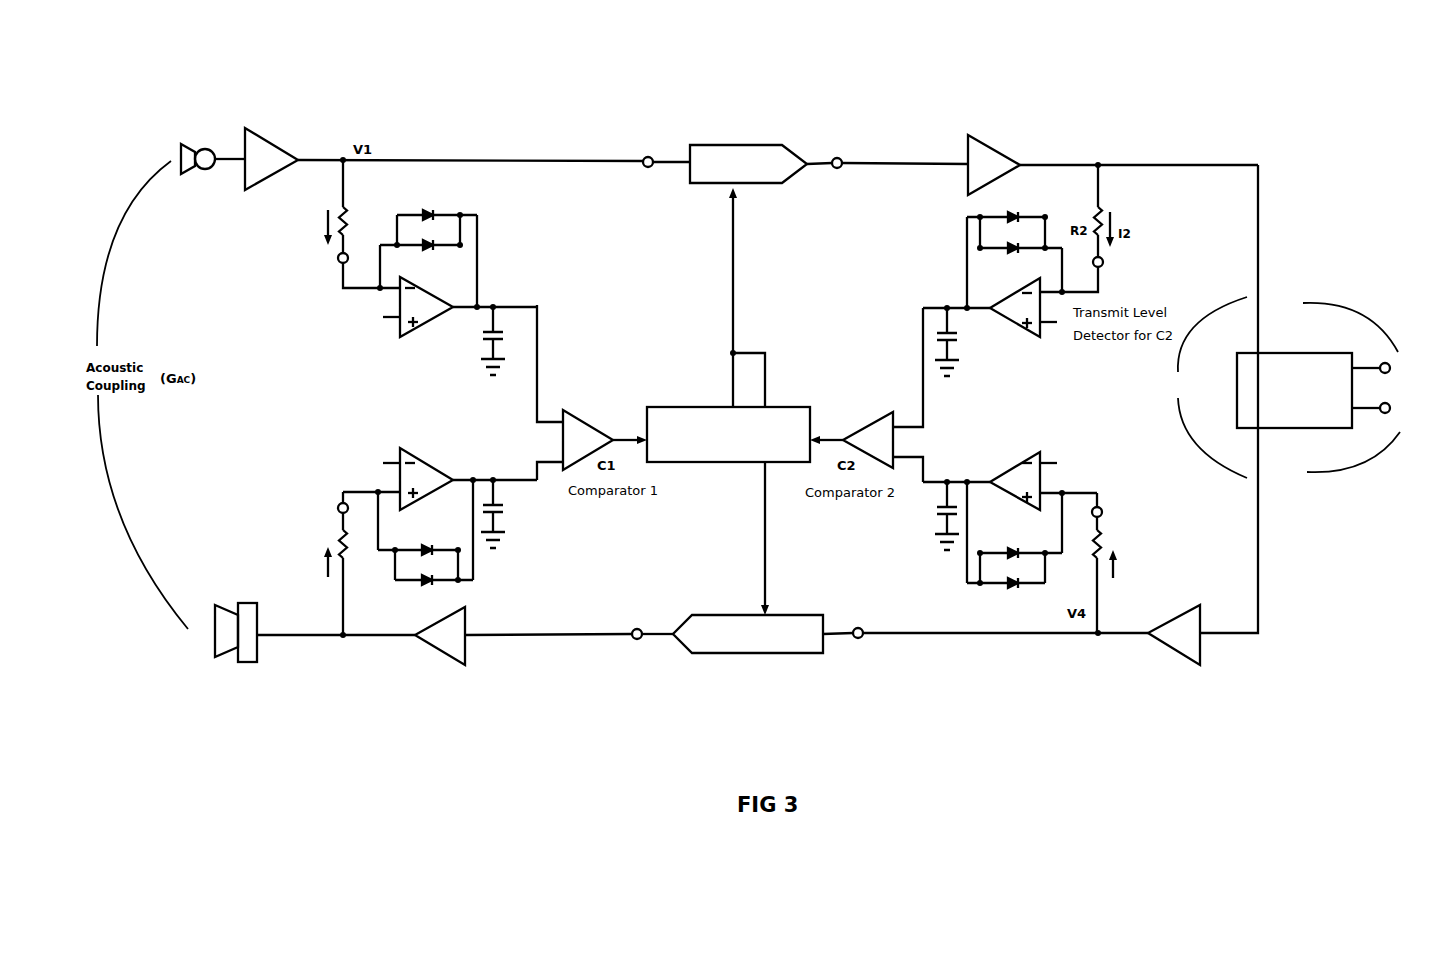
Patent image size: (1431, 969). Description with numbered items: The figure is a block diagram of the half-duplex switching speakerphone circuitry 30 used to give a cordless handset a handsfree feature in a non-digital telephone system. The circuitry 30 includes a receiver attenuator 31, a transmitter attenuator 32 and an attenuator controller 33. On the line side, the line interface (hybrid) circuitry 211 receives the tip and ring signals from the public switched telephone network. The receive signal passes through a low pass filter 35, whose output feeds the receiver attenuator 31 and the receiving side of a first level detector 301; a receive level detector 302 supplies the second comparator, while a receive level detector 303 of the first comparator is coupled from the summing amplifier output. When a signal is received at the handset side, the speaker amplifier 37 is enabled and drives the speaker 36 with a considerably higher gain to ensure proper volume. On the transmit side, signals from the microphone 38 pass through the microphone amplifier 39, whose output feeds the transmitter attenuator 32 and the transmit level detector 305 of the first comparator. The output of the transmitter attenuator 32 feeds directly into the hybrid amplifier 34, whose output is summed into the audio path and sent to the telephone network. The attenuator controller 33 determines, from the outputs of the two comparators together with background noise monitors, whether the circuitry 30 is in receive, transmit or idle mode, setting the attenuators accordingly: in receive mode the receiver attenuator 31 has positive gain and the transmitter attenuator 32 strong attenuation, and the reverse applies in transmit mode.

The half-duplex switching speakerphone circuitry 30 is at (532, 97).
The receiver attenuator 31 is at (666, 648).
The transmitter attenuator 32 is at (800, 131).
The attenuator controller 33 is at (728, 401).
The hybrid amplifier 34 is at (1113, 119).
The filter 35 is at (1031, 659).
The speaker 36 is at (236, 644).
The speaker amplifier 37 is at (361, 661).
The microphone 38 is at (226, 115).
The microphone amplifier 39 is at (305, 129).
The line interface (hybrid) circuitry 211 is at (1296, 409).
The first level detector 301 is at (1109, 560).
The receive level detector 302 is at (1002, 472).
The receive level detector 303 is at (438, 475).
The transmit level detector 305 is at (433, 320).